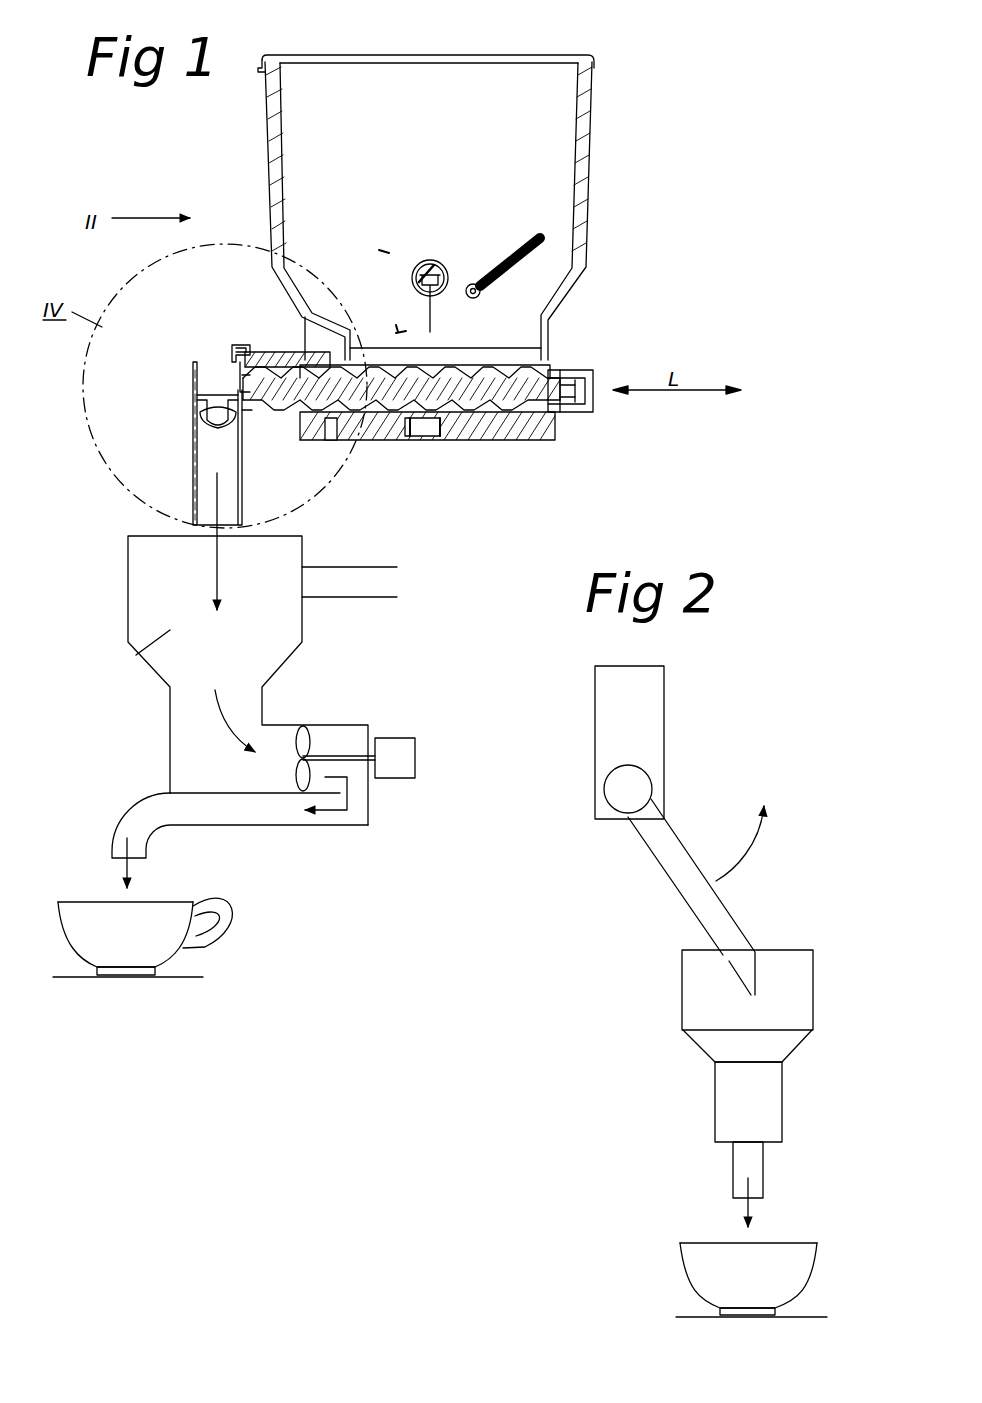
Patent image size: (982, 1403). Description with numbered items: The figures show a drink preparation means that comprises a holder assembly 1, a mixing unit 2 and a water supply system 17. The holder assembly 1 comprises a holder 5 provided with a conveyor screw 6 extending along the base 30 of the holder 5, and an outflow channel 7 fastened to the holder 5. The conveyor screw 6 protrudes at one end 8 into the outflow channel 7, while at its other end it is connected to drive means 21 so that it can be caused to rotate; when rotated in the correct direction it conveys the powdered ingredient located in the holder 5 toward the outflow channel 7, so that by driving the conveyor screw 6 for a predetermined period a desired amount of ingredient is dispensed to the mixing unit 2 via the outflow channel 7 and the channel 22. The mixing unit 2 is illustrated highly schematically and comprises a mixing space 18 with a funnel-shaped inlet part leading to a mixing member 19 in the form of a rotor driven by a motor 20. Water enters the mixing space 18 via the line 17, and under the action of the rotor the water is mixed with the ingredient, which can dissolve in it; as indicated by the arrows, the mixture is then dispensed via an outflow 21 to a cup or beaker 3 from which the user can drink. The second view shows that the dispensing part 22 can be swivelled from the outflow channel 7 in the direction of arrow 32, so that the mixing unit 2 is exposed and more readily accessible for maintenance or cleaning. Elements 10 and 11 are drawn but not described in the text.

In FIG. 1, the holder assembly 1 is at (203, 186).
In FIG. 2, the holder assembly 1 is at (752, 762).
In FIG. 1, the mixing unit 2 is at (120, 580).
In FIG. 2, the mixing unit 2 is at (678, 1003).
In FIG. 1, the cup or beaker 3 is at (92, 908).
In FIG. 2, the cup or beaker 3 is at (697, 1262).
In FIG. 1, the holder 5 is at (592, 98).
In FIG. 2, the holder 5 is at (654, 724).
In FIG. 1, the conveyor screw 6 is at (520, 424).
In FIG. 1, the outflow channel 7 is at (188, 410).
In FIG. 2, the outflow channel 7 is at (630, 836).
In FIG. 1, the end of conveyor screw 8 is at (290, 386).
In FIG. 1, the cover plate 10 is at (230, 347).
In FIG. 1, the bearing block 11 is at (243, 383).
In FIG. 1, the water supply system 17 is at (343, 568).
In FIG. 1, the mixing space 18 is at (140, 653).
In FIG. 1, the mixing member 19 is at (303, 744).
In FIG. 1, the motor 20 is at (398, 752).
In FIG. 1, the outflow 21 is at (592, 410).
In FIG. 1, the channel 22 is at (197, 475).
In FIG. 2, the channel 22 is at (700, 897).
In FIG. 1, the base 30 is at (480, 432).
In FIG. 2, the arrow 32 is at (755, 851).